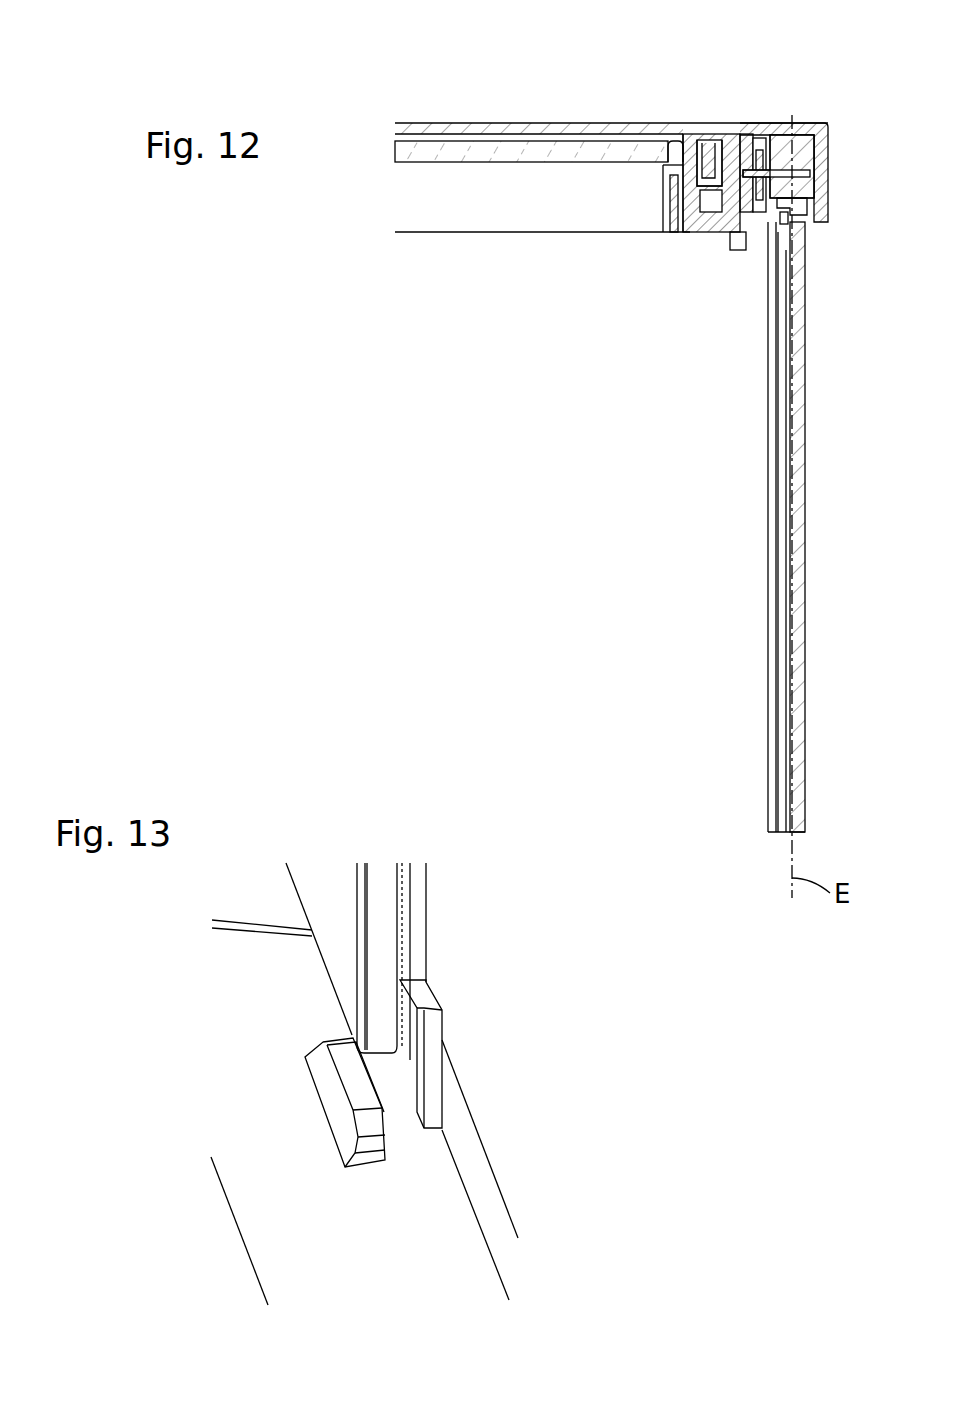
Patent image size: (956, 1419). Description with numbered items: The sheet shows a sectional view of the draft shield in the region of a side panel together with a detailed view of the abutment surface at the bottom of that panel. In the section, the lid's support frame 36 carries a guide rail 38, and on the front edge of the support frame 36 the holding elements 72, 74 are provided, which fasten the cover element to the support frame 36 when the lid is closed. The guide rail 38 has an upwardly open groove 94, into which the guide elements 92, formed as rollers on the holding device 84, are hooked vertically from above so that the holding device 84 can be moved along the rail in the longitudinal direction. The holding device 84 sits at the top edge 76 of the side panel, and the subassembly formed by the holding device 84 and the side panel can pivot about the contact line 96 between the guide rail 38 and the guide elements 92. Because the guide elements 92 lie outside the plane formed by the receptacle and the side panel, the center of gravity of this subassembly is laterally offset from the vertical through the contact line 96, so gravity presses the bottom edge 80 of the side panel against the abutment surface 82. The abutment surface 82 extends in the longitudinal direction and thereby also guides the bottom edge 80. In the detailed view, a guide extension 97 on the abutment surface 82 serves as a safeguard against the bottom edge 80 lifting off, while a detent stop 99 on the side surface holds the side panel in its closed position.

In FIG. 12, the support frame 36 is at (680, 232).
In FIG. 12, the holding element 72 is at (706, 158).
In FIG. 12, the holding element 74 is at (707, 205).
In FIG. 12, the upwardly open groove 94 is at (733, 200).
In FIG. 12, the guide element 92 is at (757, 160).
In FIG. 12, the holding device 84 is at (798, 150).
In FIG. 12, the top edge 76 is at (803, 205).
In FIG. 12, the guide rail 38 is at (784, 222).
In FIG. 12, the contact line 96 is at (760, 228).
In FIG. 13, the bottom edge 80 is at (326, 975).
In FIG. 13, the abutment surface 82 is at (468, 1140).
In FIG. 13, the detent stop 99 is at (430, 1048).
In FIG. 13, the guide extension 97 is at (345, 1105).